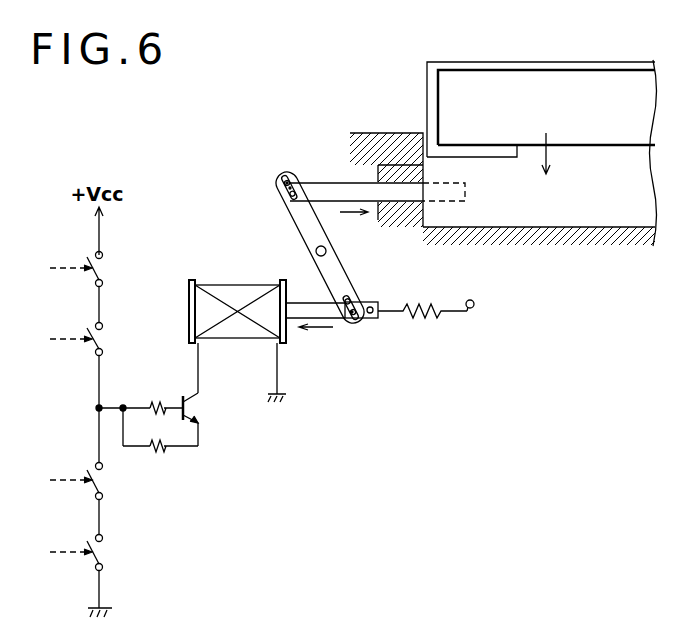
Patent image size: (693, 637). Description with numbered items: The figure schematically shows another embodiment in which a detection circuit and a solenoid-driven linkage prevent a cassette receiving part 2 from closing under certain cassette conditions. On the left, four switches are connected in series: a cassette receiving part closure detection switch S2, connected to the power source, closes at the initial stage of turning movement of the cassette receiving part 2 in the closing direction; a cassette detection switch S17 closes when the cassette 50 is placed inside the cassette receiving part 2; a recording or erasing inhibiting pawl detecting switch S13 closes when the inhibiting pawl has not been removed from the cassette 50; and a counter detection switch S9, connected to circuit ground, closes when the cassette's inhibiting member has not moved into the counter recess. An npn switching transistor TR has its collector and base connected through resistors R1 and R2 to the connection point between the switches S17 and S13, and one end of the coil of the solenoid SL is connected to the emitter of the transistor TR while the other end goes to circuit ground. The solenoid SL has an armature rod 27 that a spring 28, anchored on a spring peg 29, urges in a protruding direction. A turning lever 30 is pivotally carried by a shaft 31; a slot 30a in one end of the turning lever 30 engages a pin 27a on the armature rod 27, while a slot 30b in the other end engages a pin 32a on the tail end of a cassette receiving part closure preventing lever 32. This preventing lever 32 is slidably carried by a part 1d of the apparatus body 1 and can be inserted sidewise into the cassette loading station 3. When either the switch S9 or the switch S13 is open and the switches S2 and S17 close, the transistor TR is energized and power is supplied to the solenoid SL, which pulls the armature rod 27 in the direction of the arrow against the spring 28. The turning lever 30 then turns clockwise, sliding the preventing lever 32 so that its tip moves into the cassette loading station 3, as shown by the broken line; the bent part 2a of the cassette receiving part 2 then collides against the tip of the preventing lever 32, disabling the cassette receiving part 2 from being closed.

The apparatus body 1 is at (398, 133).
The part of the apparatus body 1d is at (403, 212).
The cassette receiving part 2 is at (553, 62).
The bent part 2a is at (503, 158).
The cassette loading station 3 is at (595, 197).
The cassette 50 is at (598, 112).
The armature rod 27 is at (342, 318).
The pin 27a is at (366, 320).
The spring 28 is at (428, 318).
The spring peg 29 is at (479, 302).
The turning lever 30 is at (318, 273).
The slot 30a is at (358, 302).
The slot 30b is at (285, 200).
The shaft 31 is at (315, 252).
The cassette receiving part closure preventing lever 32 is at (343, 183).
The pin 32a is at (292, 172).
The solenoid SL is at (233, 285).
The npn switching transistor TR is at (200, 412).
The resistor R1 is at (162, 452).
The resistor R2 is at (157, 400).
The cassette receiving part closure detection switch S2 is at (106, 270).
The cassette detection switch S17 is at (106, 342).
The recording or erasing inhibiting pawl detecting switch S13 is at (106, 484).
The counter detection switch S9 is at (106, 556).